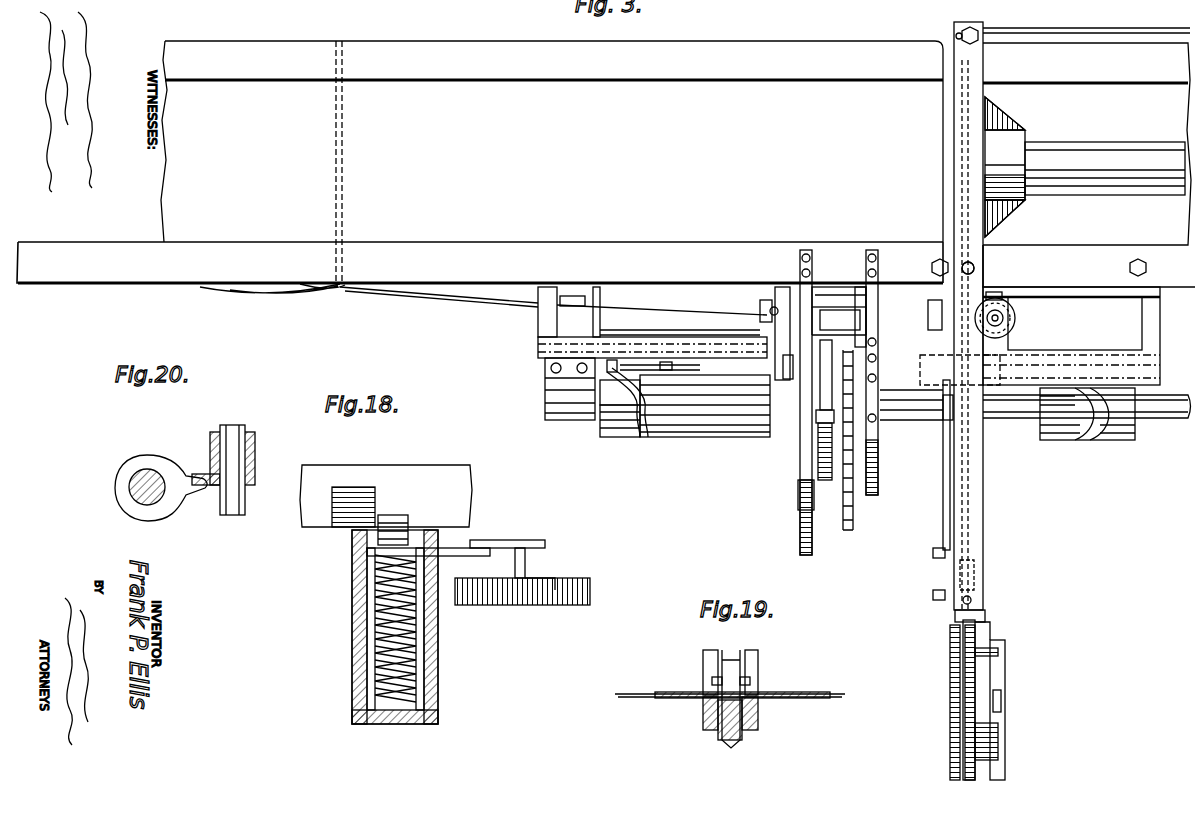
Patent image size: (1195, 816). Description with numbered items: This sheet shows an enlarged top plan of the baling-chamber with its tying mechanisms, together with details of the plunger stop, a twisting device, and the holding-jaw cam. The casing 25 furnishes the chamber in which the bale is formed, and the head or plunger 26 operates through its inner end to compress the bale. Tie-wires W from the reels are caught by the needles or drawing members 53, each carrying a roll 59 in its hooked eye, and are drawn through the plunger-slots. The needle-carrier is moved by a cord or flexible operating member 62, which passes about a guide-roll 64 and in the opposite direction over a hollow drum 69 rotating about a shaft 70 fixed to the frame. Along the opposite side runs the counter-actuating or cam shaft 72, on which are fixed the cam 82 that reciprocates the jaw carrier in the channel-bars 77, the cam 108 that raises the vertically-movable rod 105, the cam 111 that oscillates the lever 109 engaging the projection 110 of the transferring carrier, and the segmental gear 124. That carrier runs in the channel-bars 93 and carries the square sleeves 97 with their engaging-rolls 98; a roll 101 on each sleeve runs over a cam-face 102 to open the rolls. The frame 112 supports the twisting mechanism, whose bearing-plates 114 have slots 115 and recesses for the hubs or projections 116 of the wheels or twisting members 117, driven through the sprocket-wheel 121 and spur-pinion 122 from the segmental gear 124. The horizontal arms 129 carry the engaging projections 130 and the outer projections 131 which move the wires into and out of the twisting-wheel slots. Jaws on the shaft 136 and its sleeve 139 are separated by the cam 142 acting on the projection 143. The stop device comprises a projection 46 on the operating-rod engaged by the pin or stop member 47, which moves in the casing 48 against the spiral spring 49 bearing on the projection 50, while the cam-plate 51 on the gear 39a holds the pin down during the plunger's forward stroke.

In FIG. 3, the tie-wires W is at (1072, 28).
In FIG. 3, the casing 25 is at (676, 162).
In FIG. 3, the head or plunger 26 is at (1003, 120).
In FIG. 3, the channel-bars 93 is at (538, 349).
In FIG. 3, the roll 101 is at (770, 318).
In FIG. 3, the cam-face 102 is at (768, 309).
In FIG. 3, the lever 109 is at (665, 358).
In FIG. 3, the projections 131 is at (826, 338).
In FIG. 3, the vertically-movable rod 105 is at (783, 366).
In FIG. 3, the projection 110 is at (703, 373).
In FIG. 3, the cam 108 is at (757, 437).
In FIG. 3, the cam 111 is at (663, 437).
In FIG. 3, the engaging projections 130 is at (804, 294).
In FIG. 3, the horizontal arms 129 is at (840, 290).
In FIG. 3, the tubular member or sleeve 97 is at (878, 316).
In FIG. 3, the engaging-roll 98 is at (968, 275).
In FIG. 3, the sprocket-wheel 121 is at (855, 525).
In FIG. 3, the spur-pinion 122 is at (828, 455).
In FIG. 3, the segmental gear 124 is at (818, 437).
In FIG. 3, the frame 112 is at (805, 482).
In FIG. 3, the roll 59 is at (943, 412).
In FIG. 3, the needles or drawing members 53 is at (945, 501).
In FIG. 3, the cord or flexible operating member 62 is at (1130, 298).
In FIG. 3, the channel-bars 77 is at (1075, 358).
In FIG. 3, the guide-roll 64 is at (1016, 320).
In FIG. 3, the counter-actuating or cam shaft 72 is at (1175, 418).
In FIG. 20, the counter-actuating or cam shaft 72 is at (130, 488).
In FIG. 3, the cam 82 is at (1122, 440).
In FIG. 3, the shaft 70 is at (1010, 702).
In FIG. 3, the hollow drum 69 is at (950, 689).
In FIG. 20, the cam 142 is at (173, 513).
In FIG. 20, the projection 143 is at (197, 474).
In FIG. 20, the sleeve 139 is at (255, 449).
In FIG. 20, the shaft 136 is at (245, 505).
In FIG. 18, the projection 46 is at (348, 492).
In FIG. 18, the pin or stop member 47 is at (405, 518).
In FIG. 18, the casing 48 is at (352, 647).
In FIG. 18, the spiral spring 49 is at (420, 640).
In FIG. 18, the projection 50 is at (460, 548).
In FIG. 18, the cam-plate 51 is at (545, 542).
In FIG. 18, the gear 39a is at (592, 589).
In FIG. 19, the wheels or twisting members 117 is at (718, 668).
In FIG. 19, the slots 115 is at (736, 656).
In FIG. 19, the hubs or projections 116 is at (748, 680).
In FIG. 19, the bearing-plates 114 is at (703, 714).